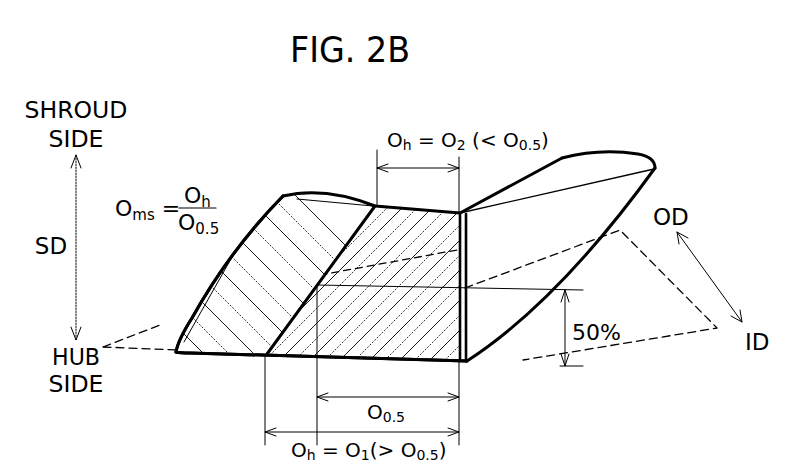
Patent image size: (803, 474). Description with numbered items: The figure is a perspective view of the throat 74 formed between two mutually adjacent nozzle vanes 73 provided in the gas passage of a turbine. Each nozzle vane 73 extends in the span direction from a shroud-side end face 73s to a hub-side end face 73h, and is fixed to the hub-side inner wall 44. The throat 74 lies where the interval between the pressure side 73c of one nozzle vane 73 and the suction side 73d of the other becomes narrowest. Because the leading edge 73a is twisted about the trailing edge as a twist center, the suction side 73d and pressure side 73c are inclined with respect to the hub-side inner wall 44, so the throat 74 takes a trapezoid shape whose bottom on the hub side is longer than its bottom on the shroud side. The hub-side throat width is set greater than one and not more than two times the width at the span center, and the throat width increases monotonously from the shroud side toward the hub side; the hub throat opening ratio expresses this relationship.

The hub-side inner wall 44 is at (630, 318).
The nozzle vane 73 is at (332, 188).
The shroud-side end face 73s is at (313, 193).
The leading edge 73a is at (638, 152).
The pressure side 73c is at (183, 318).
The suction side 73d is at (267, 338).
The hub-side end face 73h is at (197, 353).
The throat 74 is at (407, 343).